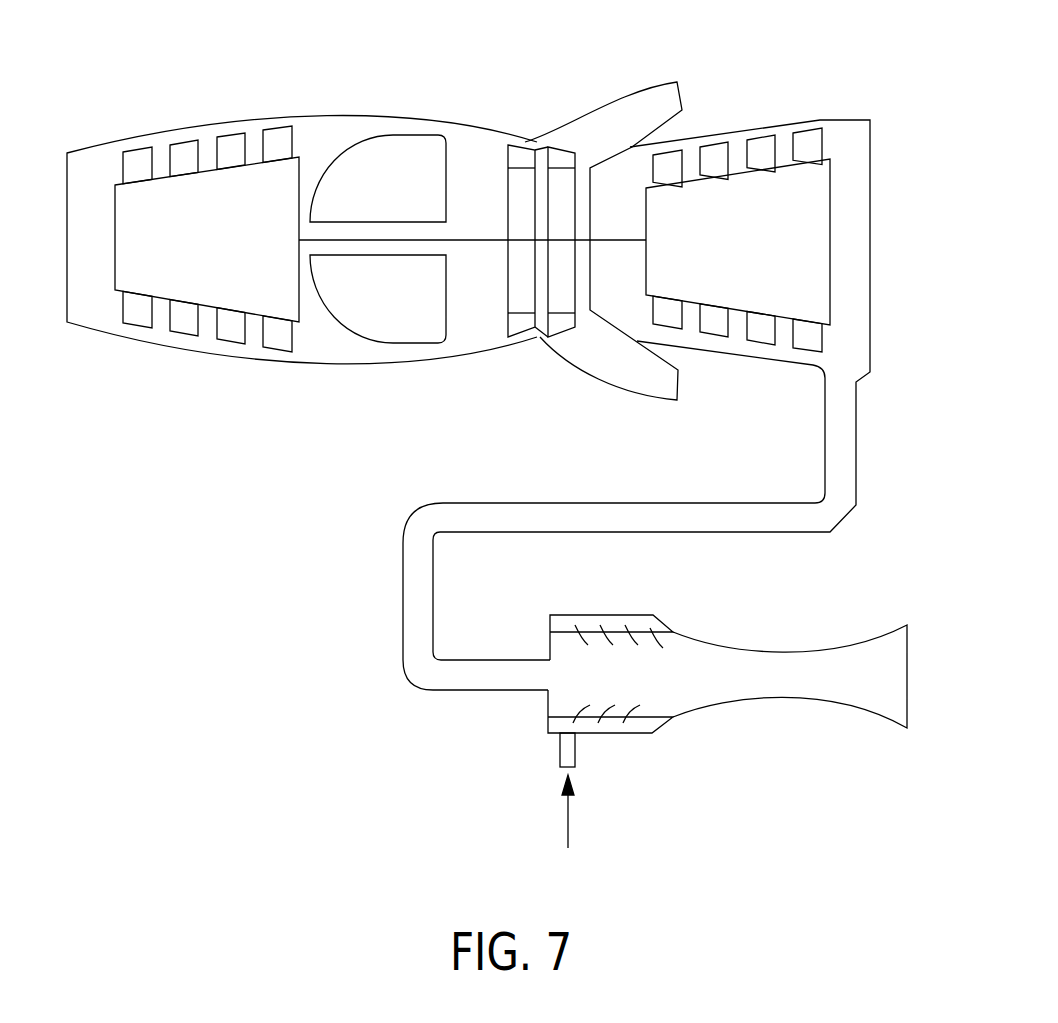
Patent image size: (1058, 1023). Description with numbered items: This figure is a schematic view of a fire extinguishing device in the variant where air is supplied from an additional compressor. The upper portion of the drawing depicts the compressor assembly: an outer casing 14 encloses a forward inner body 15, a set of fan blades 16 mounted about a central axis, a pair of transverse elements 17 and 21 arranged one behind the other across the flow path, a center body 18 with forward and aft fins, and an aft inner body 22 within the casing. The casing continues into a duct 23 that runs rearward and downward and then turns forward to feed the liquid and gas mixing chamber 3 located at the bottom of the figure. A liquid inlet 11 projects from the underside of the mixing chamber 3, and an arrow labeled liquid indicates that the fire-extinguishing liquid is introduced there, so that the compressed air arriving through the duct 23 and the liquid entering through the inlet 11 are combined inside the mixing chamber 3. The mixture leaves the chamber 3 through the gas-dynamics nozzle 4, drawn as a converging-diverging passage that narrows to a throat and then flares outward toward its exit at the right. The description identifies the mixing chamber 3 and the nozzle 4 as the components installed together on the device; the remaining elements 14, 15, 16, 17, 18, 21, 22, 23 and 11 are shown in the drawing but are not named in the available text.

The housing 14 is at (87, 163).
The inner body 15 is at (272, 168).
The fan blades 16 is at (407, 147).
The heat exchanger 17 is at (520, 177).
The center body 18 is at (608, 108).
The heat exchanger 21 is at (562, 300).
The inner body 22 is at (803, 178).
The duct 23 is at (417, 608).
The liquid and gas mixing chamber 3 is at (648, 653).
The gas-dynamics nozzle 4 is at (847, 658).
The liquid inlet 11 is at (555, 727).